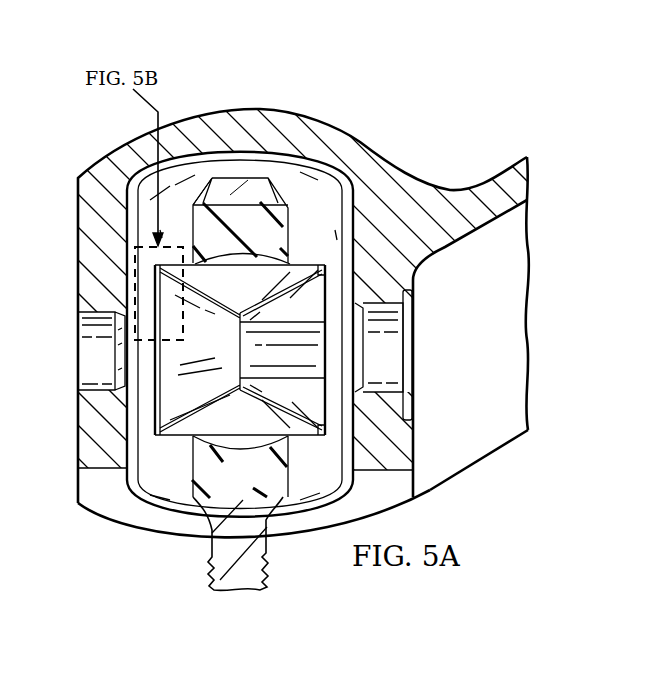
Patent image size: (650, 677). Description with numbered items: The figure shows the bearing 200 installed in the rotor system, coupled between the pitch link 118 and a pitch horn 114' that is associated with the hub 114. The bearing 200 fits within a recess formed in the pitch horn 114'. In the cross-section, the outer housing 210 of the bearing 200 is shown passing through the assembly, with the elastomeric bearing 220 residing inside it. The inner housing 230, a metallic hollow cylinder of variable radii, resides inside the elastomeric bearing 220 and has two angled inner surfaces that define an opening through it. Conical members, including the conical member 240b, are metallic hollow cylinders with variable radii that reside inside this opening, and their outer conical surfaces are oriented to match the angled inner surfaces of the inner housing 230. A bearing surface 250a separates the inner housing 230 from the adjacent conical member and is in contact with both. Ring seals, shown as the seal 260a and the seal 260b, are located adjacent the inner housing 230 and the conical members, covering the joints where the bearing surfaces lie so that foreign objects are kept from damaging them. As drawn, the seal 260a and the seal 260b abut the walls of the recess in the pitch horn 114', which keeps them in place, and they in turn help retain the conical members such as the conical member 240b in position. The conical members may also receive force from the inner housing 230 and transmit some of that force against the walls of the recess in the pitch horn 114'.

The bearing 200 is at (366, 128).
The outer housing 210 is at (240, 187).
The elastomeric bearing 220 is at (280, 247).
The inner housing 230 is at (258, 288).
The conical member 240b is at (328, 385).
The bearing surface 250a is at (175, 436).
The seal 260a is at (152, 363).
The seal 260b is at (328, 433).
The pitch horn 114' is at (270, 313).
The hub 114 is at (570, 273).
The pitch link 118 is at (238, 598).